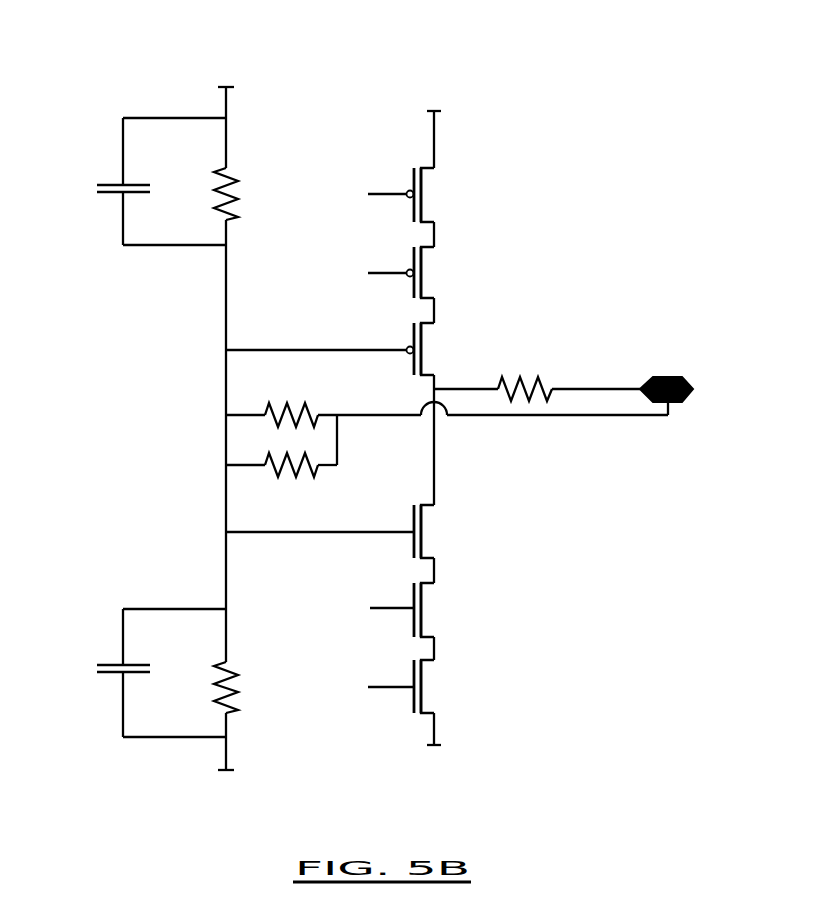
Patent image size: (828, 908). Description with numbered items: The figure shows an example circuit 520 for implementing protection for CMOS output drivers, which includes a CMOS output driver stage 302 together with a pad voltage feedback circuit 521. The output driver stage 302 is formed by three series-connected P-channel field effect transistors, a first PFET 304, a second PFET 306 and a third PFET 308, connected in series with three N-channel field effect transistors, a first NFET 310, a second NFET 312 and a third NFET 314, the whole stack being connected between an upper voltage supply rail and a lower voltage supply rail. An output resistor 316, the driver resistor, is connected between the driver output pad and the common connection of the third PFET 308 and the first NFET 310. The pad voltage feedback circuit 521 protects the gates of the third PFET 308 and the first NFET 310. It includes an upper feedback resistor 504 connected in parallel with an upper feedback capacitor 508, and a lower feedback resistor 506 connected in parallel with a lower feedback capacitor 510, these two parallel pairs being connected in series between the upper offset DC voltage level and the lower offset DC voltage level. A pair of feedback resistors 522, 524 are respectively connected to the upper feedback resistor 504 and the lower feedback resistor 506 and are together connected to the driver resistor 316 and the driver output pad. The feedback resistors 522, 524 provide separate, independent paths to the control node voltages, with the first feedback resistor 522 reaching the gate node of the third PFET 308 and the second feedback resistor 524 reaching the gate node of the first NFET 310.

The circuit 520 is at (410, 36).
The pad voltage feedback circuit 521 is at (112, 121).
The output driver stage 302 is at (583, 156).
The capacitor CFBU 508 is at (151, 181).
The resistor RFBU 504 is at (257, 194).
The PFET TP1 304 is at (379, 195).
The PFET TP2 306 is at (394, 272).
The PFET TP3 308 is at (435, 349).
The output resistor 316 is at (537, 366).
The resistor RFB 522 is at (447, 392).
The resistor RFB 524 is at (281, 471).
The NFET TN1 310 is at (438, 531).
The NFET TN2 312 is at (393, 610).
The NFET TN3 314 is at (381, 686).
The capacitor CFBD 510 is at (152, 673).
The resistor RFBD 506 is at (257, 687).